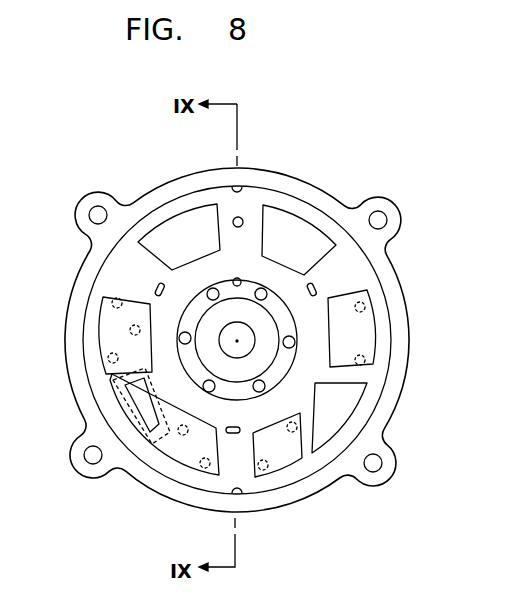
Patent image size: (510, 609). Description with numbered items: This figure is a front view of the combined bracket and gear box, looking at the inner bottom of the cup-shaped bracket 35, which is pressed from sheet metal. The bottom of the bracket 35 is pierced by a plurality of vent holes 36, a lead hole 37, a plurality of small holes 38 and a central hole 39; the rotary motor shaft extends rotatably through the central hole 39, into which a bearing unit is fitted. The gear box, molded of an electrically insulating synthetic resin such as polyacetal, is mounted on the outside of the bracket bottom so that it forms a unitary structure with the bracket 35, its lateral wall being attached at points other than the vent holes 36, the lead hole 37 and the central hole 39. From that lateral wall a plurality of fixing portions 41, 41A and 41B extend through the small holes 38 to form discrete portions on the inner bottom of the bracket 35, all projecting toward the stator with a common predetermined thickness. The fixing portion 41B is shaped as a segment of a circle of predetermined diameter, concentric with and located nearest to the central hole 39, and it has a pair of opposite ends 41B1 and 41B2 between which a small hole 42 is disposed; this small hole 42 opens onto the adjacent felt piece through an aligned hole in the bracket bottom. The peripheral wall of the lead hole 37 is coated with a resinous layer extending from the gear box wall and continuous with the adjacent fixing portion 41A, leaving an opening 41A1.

The cup-shaped bracket 35 is at (308, 194).
The vent holes 36 is at (198, 221).
The lead hole 37 is at (113, 387).
The small holes 38 is at (284, 300).
The central hole 39 is at (238, 347).
The fixing portion 41 is at (363, 342).
The fixing portion 41A is at (158, 452).
The opening 41A1 is at (140, 397).
The fixing portion 41B is at (182, 318).
The end of segment 41B1 is at (232, 289).
The end of segment 41B2 is at (246, 290).
The small hole 42 is at (250, 283).